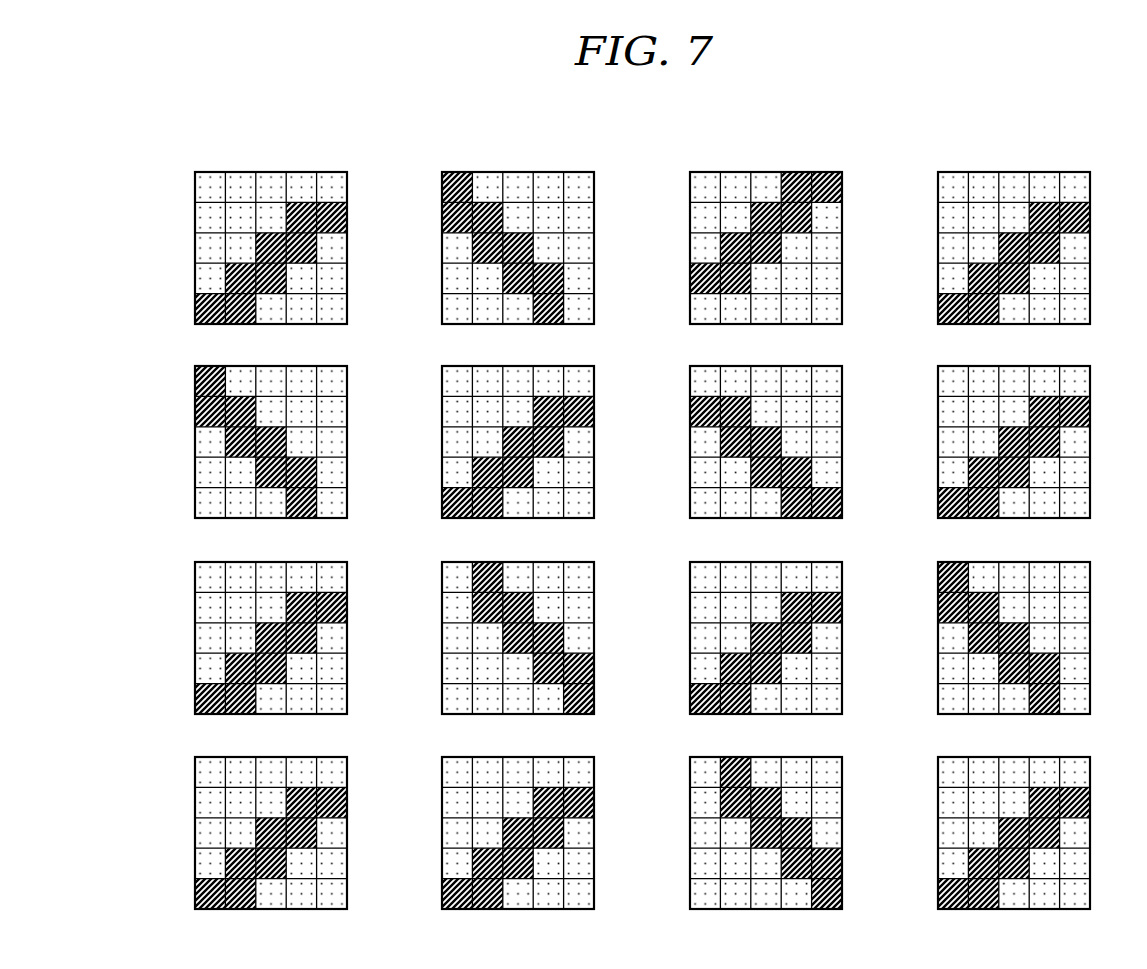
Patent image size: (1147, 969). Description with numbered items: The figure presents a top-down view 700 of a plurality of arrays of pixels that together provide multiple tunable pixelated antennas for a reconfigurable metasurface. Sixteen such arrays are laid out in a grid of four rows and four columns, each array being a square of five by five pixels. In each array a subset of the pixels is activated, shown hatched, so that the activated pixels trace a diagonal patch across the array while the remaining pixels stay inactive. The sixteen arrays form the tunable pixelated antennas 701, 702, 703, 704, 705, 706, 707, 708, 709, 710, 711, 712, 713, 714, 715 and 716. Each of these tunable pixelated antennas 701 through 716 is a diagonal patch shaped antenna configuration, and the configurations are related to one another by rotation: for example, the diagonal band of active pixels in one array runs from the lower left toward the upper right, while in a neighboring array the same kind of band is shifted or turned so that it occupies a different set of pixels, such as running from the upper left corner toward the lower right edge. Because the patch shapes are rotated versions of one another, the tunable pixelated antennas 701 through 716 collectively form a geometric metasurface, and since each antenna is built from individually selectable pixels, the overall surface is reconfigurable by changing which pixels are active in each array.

The top-down view 700 is at (662, 115).
The tunable pixelated antenna 701 is at (232, 234).
The tunable pixelated antenna 702 is at (479, 234).
The tunable pixelated antenna 703 is at (727, 234).
The tunable pixelated antenna 704 is at (975, 234).
The tunable pixelated antenna 705 is at (232, 428).
The tunable pixelated antenna 706 is at (479, 428).
The tunable pixelated antenna 707 is at (727, 428).
The tunable pixelated antenna 708 is at (975, 428).
The tunable pixelated antenna 709 is at (232, 624).
The tunable pixelated antenna 710 is at (479, 624).
The tunable pixelated antenna 711 is at (727, 624).
The tunable pixelated antenna 712 is at (975, 624).
The tunable pixelated antenna 713 is at (232, 819).
The tunable pixelated antenna 714 is at (479, 819).
The tunable pixelated antenna 715 is at (727, 819).
The tunable pixelated antenna 716 is at (975, 819).